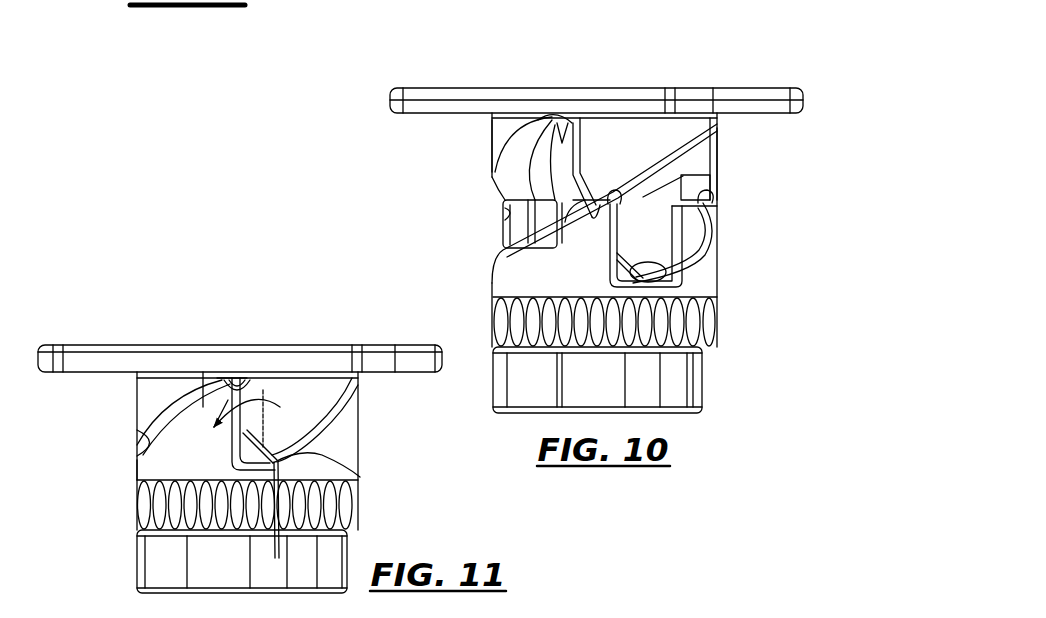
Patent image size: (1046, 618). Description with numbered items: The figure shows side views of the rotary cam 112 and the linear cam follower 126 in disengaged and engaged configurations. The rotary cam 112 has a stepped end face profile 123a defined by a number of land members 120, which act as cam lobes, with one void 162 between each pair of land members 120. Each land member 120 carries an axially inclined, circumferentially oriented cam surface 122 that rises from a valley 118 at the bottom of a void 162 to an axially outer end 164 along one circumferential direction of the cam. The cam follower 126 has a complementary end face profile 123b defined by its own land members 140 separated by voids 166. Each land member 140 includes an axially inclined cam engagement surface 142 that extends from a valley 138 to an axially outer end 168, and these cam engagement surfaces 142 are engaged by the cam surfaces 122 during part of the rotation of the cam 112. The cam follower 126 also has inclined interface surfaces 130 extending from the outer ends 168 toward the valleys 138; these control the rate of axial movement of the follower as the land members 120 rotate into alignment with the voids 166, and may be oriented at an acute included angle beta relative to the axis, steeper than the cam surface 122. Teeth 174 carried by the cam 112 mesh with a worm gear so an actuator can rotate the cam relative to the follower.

In FIG. 10, the rotary cam 112 is at (491, 373).
In FIG. 11, the rotary cam 112 is at (137, 578).
In FIG. 10, the valley 118 is at (663, 258).
In FIG. 11, the valley 118 is at (268, 523).
In FIG. 10, the land member 120 is at (718, 203).
In FIG. 11, the land member 120 is at (203, 404).
In FIG. 10, the cam surface 122 is at (700, 247).
In FIG. 11, the cam surface 122 is at (157, 413).
In FIG. 10, the stepped end face profile 123a is at (728, 181).
In FIG. 11, the stepped end face profile 123a is at (131, 483).
In FIG. 10, the complementary end face profile 123b is at (480, 193).
In FIG. 11, the complementary end face profile 123b is at (337, 443).
In FIG. 10, the cam follower 126 is at (478, 86).
In FIG. 11, the cam follower 126 is at (74, 347).
In FIG. 10, the interface surface 130 is at (570, 210).
In FIG. 11, the interface surface 130 is at (242, 442).
In FIG. 10, the valley 138 is at (568, 126).
In FIG. 11, the valley 138 is at (245, 389).
In FIG. 10, the land member 140 is at (505, 216).
In FIG. 11, the land member 140 is at (347, 463).
In FIG. 10, the cam engagement surface 142 is at (502, 176).
In FIG. 11, the cam engagement surface 142 is at (148, 449).
In FIG. 10, the void 162 is at (657, 242).
In FIG. 10, the axially outer end 164 is at (620, 201).
In FIG. 10, the void 166 is at (566, 146).
In FIG. 10, the axially outer end 168 is at (590, 199).
In FIG. 10, the teeth 174 is at (702, 334).
In FIG. 11, the teeth 174 is at (347, 510).